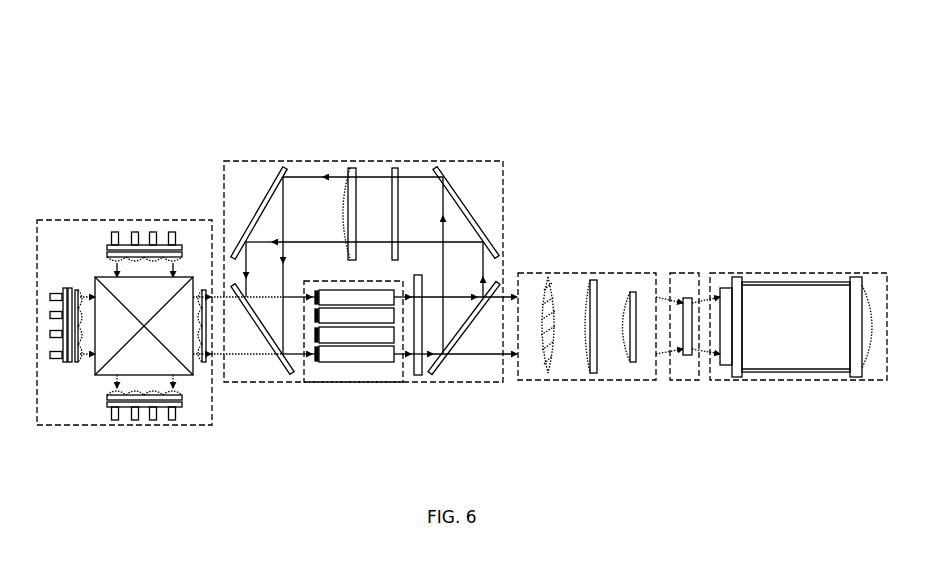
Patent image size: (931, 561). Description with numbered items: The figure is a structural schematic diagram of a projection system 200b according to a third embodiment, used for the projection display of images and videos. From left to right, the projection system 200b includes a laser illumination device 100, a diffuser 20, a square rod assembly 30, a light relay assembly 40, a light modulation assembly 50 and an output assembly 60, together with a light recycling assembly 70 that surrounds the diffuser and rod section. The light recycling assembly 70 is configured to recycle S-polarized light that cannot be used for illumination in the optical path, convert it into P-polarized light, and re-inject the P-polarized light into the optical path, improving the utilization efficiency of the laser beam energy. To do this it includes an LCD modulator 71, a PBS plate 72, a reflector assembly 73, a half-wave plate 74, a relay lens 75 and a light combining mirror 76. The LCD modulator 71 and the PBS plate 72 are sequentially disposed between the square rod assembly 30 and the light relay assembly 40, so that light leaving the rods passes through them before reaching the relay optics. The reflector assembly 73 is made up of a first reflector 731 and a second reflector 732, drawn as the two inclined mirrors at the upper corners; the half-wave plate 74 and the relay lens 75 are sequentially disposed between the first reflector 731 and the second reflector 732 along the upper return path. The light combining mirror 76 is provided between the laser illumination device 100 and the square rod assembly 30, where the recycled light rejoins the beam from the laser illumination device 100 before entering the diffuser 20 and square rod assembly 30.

The projection system 200b is at (436, 58).
The laser illumination device 100 is at (80, 219).
The light recycling assembly 70 is at (250, 161).
The reflector assembly 73 is at (503, 99).
The second reflector 732 is at (286, 170).
The first reflector 731 is at (438, 168).
The relay lens 75 is at (350, 168).
The half-wave plate 74 is at (395, 168).
The light combining mirror 76 is at (282, 363).
The diffuser 20 is at (317, 365).
The square rod assembly 30 is at (356, 358).
The LCD modulator 71 is at (418, 376).
The PBS plate 72 is at (433, 375).
The light relay assembly 40 is at (575, 382).
The light modulation assembly 50 is at (685, 381).
The output assembly 60 is at (772, 381).